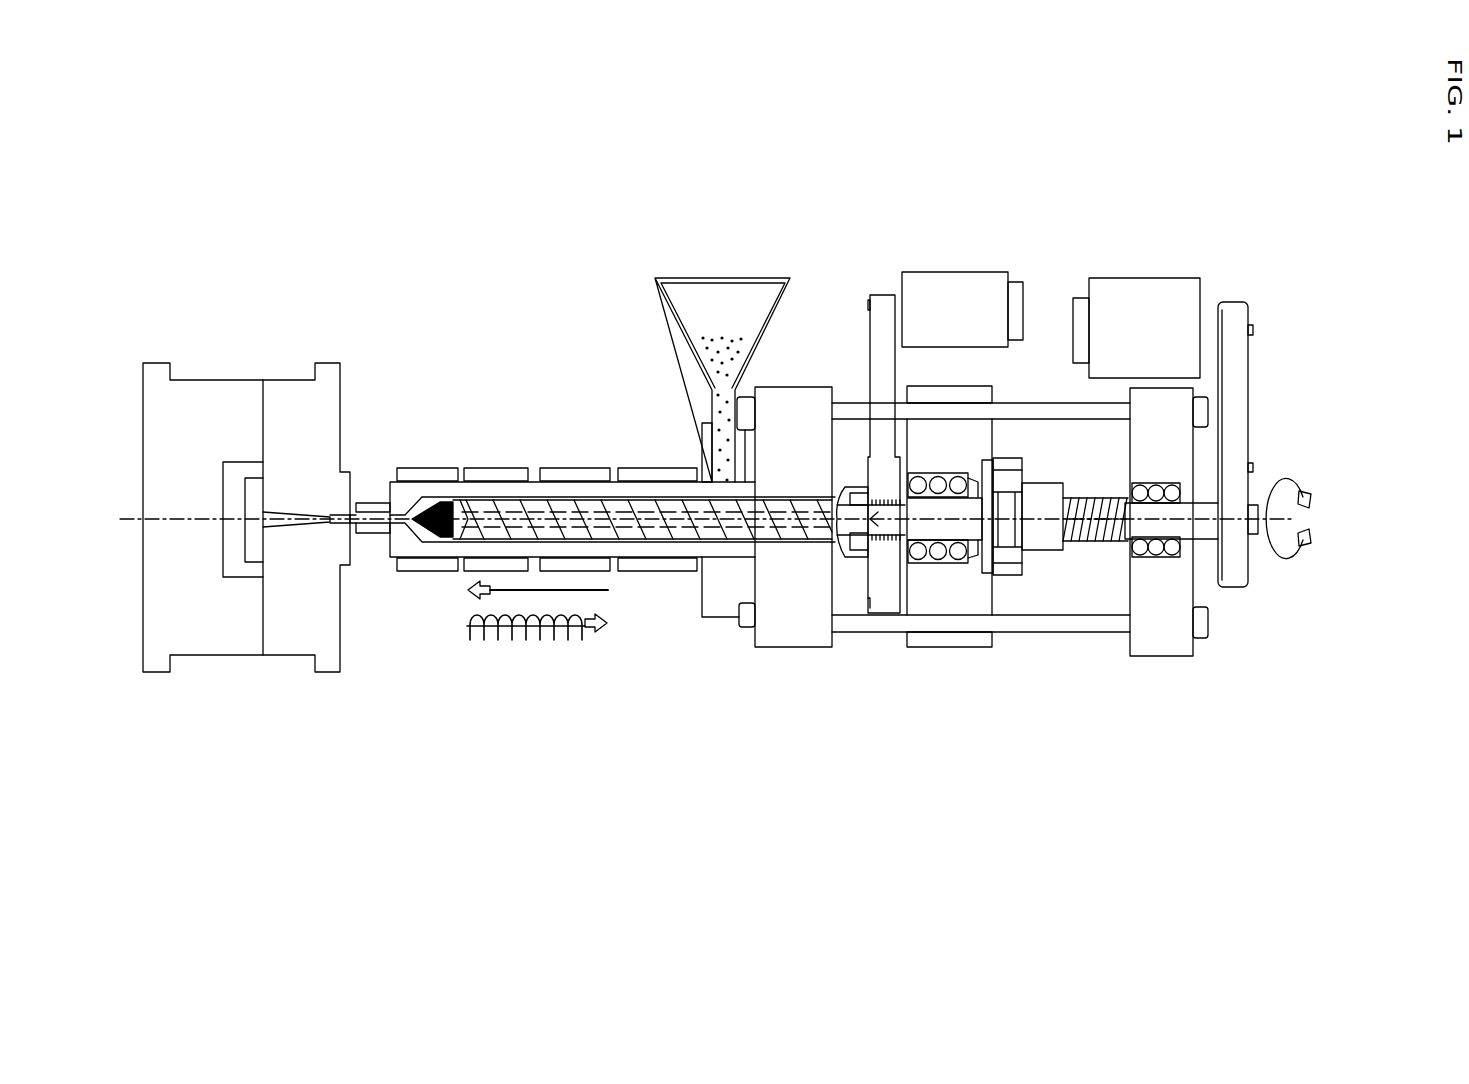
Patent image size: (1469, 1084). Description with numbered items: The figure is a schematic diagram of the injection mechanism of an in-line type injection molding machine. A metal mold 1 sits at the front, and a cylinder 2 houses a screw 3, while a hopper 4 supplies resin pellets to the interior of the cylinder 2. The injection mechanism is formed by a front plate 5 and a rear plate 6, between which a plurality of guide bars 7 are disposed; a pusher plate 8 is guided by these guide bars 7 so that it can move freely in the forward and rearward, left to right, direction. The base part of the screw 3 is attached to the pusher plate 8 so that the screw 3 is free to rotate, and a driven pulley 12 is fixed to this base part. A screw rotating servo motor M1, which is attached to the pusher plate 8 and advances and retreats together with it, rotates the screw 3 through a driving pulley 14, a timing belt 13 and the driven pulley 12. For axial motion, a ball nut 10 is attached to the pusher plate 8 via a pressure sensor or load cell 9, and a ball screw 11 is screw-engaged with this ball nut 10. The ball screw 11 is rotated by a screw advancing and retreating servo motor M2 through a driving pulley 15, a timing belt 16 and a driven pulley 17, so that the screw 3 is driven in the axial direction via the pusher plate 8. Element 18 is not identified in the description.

The metal mold 1 is at (240, 379).
The cylinder 2 is at (523, 470).
The screw 3 is at (647, 546).
The hopper 4 is at (677, 323).
The front plate 5 is at (790, 633).
The rear plate 6 is at (1163, 648).
The guide bars 7 is at (1008, 405).
The pusher plate 8 is at (928, 640).
The pressure sensor (load cell) 9 is at (985, 548).
The ball nut 10 is at (1058, 551).
The ball screw 11 is at (1087, 541).
The driven pulley 12 is at (372, 533).
The timing belt 13 is at (873, 370).
The driving pulley 14 is at (867, 302).
The driving pulley 15 is at (1250, 308).
The timing belt 16 is at (1241, 388).
The driven pulley 17 is at (1250, 463).
The heater 18 is at (478, 469).
The screw rotating servo motor M1 is at (955, 272).
The screw advancing and retreating servo motor M2 is at (1134, 280).